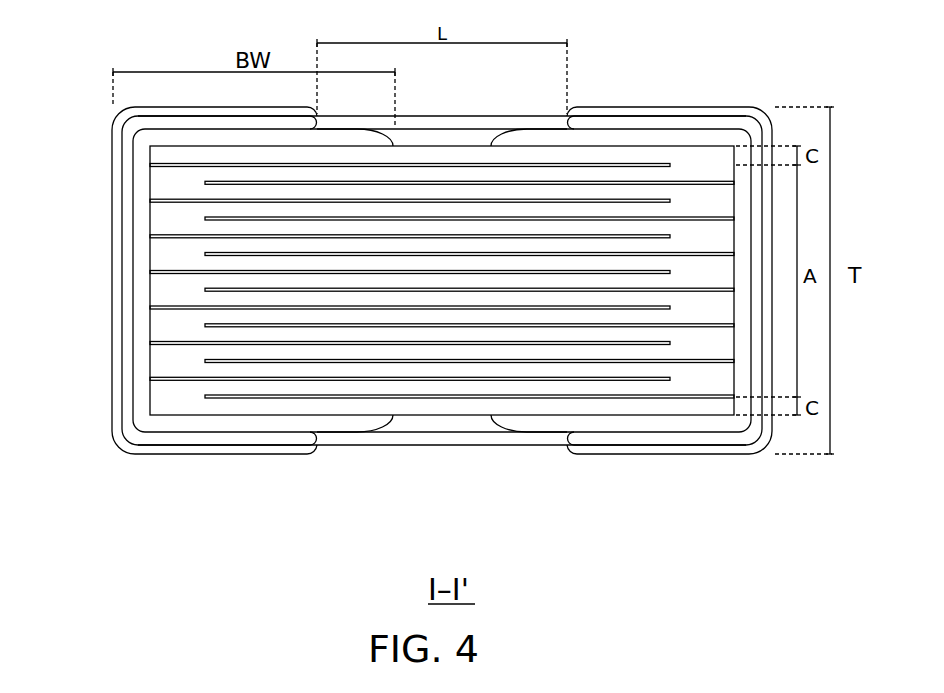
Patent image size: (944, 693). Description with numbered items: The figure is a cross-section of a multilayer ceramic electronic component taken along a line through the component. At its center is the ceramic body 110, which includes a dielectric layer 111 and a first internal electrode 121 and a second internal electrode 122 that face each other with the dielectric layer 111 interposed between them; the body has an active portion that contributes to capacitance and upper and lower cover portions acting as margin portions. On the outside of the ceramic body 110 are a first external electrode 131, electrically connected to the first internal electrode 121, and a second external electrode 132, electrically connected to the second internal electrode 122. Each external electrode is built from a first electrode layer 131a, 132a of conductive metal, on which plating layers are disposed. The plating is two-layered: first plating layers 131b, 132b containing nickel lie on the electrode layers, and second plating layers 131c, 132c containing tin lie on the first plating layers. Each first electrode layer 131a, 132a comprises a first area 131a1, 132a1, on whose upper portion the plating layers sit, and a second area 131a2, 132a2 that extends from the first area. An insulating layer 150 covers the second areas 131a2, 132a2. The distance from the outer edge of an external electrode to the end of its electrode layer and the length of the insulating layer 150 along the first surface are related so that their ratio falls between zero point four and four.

The ceramic body 110 is at (465, 145).
The dielectric layer 111 is at (165, 324).
The first internal electrode 121 is at (167, 168).
The second internal electrode 122 is at (208, 188).
The first external electrode 131 is at (261, 347).
The first electrode layer 131a is at (271, 332).
The first area 131a1 is at (300, 453).
The second area 131a2 is at (360, 440).
The first plating layer 131b is at (220, 457).
The second plating layer 131c is at (157, 457).
The second external electrode 132 is at (622, 347).
The first electrode layer 132a is at (612, 333).
The first area 132a1 is at (600, 455).
The second area 132a2 is at (593, 513).
The first plating layer 132b is at (663, 457).
The second plating layer 132c is at (727, 455).
The insulating layer 150 is at (430, 122).